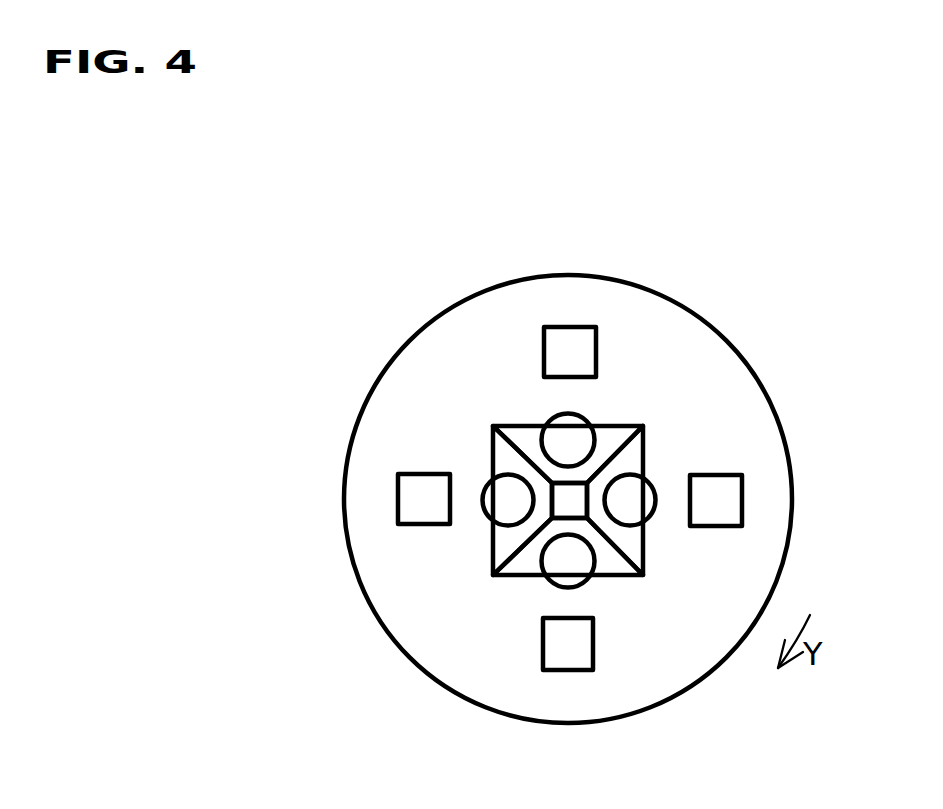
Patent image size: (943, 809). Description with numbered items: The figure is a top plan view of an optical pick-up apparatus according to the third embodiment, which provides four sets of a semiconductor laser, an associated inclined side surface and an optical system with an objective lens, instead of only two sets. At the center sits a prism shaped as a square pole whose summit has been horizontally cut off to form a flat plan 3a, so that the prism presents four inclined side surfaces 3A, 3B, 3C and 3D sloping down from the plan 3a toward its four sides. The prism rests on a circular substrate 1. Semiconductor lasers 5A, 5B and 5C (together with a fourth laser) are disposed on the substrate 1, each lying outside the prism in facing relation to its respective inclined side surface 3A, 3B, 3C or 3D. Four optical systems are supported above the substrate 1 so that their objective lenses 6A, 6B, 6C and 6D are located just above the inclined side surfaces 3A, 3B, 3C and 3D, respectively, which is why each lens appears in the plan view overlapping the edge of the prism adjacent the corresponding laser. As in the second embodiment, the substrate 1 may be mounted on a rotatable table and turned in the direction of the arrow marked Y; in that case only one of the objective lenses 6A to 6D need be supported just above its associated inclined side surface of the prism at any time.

The substrate 1 is at (660, 650).
The inclined side surface 3A is at (637, 455).
The inclined side surface 3B is at (500, 541).
The inclined side surface 3C is at (525, 435).
The inclined side surface 3D is at (608, 552).
The plan 3a is at (567, 507).
The semiconductor laser 5A is at (727, 503).
The semiconductor laser 5B is at (413, 497).
The semiconductor laser 5C is at (573, 345).
The objective lens 6A is at (637, 498).
The objective lens 6B is at (503, 502).
The objective lens 6C is at (568, 435).
The objective lens 6D is at (567, 557).